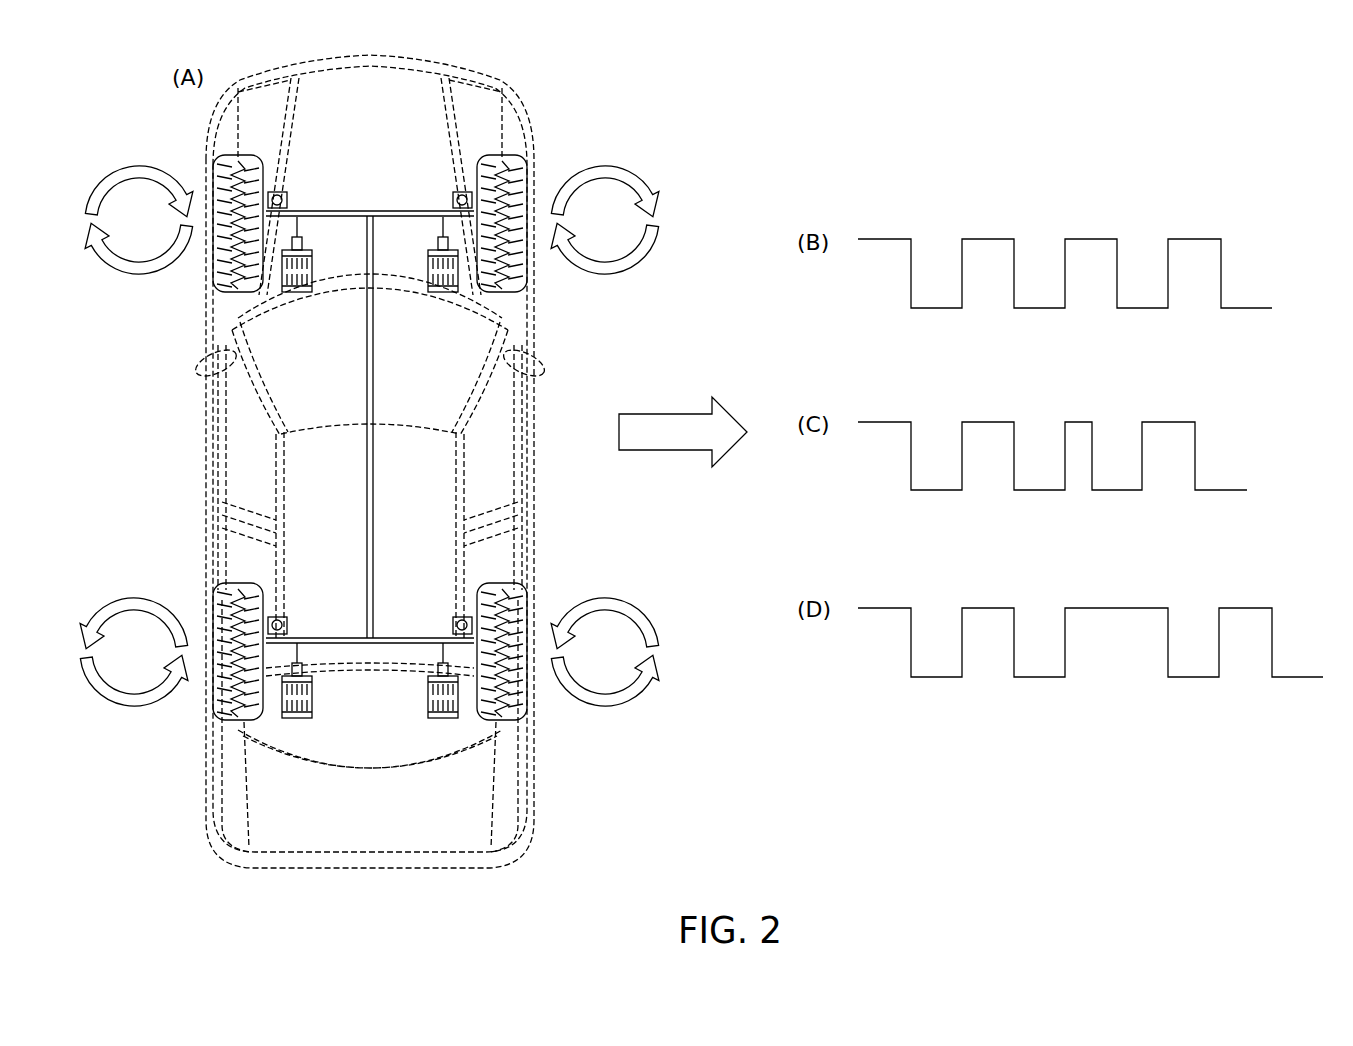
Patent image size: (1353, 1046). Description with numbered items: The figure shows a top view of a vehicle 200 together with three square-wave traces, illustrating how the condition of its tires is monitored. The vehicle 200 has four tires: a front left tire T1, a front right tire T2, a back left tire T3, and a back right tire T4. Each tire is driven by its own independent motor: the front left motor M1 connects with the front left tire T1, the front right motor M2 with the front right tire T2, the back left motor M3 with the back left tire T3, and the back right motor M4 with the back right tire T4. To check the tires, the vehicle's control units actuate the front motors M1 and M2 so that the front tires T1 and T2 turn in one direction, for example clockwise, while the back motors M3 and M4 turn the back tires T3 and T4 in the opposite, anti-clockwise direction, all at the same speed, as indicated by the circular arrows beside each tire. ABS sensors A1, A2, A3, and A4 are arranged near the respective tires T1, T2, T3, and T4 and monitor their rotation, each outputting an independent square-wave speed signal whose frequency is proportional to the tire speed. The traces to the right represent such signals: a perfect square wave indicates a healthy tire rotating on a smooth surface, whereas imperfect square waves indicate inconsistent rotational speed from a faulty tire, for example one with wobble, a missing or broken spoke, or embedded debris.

The vehicle 200 is at (533, 541).
The front left tire T1 is at (245, 210).
The front right tire T2 is at (495, 210).
The back left tire T3 is at (238, 637).
The back right tire T4 is at (502, 637).
The ABS sensor A1 is at (295, 191).
The ABS sensor A2 is at (446, 191).
The ABS sensor A3 is at (295, 617).
The ABS sensor A4 is at (446, 617).
The front left motor M1 is at (315, 254).
The front right motor M2 is at (423, 254).
The back left motor M3 is at (315, 680).
The back right motor M4 is at (423, 680).